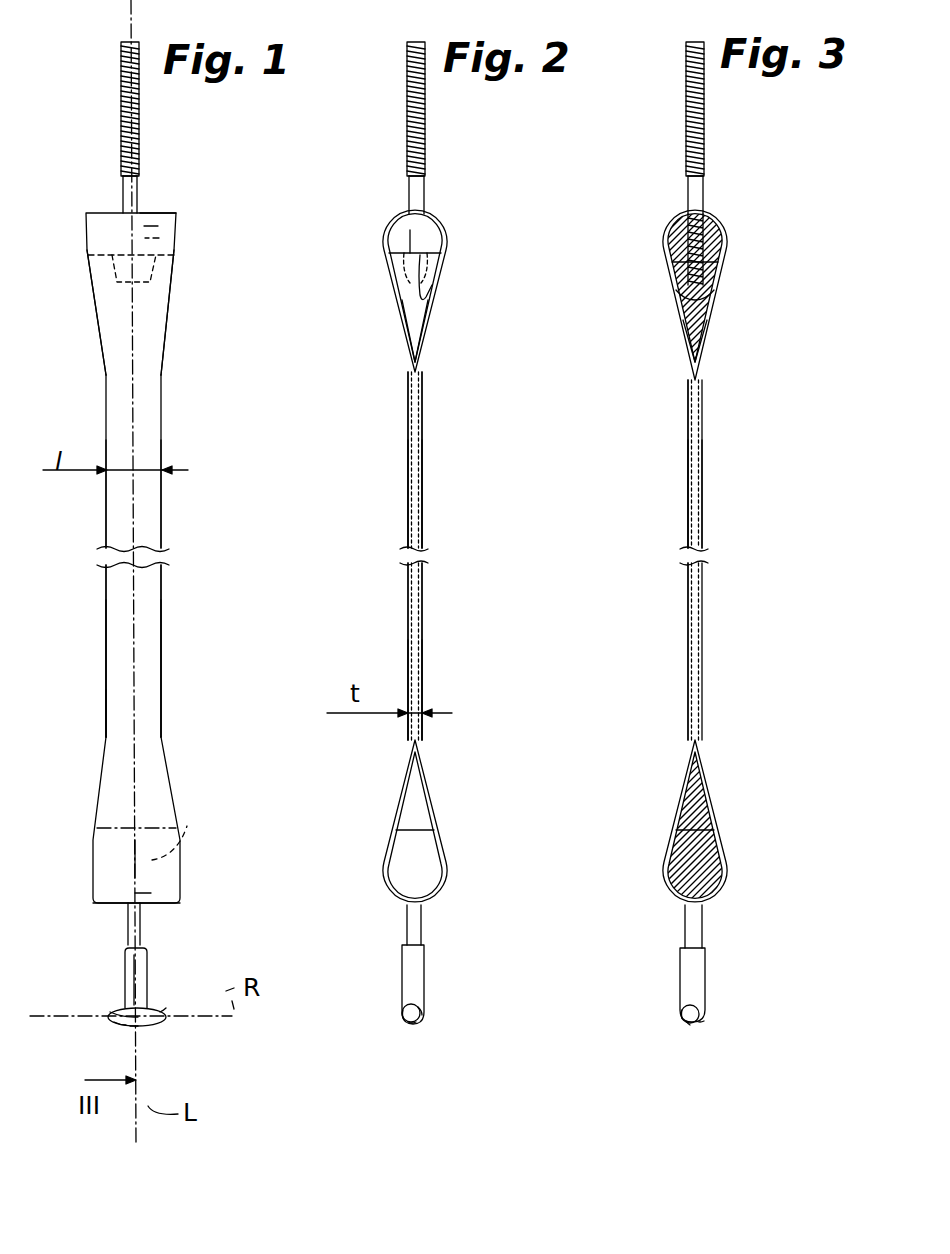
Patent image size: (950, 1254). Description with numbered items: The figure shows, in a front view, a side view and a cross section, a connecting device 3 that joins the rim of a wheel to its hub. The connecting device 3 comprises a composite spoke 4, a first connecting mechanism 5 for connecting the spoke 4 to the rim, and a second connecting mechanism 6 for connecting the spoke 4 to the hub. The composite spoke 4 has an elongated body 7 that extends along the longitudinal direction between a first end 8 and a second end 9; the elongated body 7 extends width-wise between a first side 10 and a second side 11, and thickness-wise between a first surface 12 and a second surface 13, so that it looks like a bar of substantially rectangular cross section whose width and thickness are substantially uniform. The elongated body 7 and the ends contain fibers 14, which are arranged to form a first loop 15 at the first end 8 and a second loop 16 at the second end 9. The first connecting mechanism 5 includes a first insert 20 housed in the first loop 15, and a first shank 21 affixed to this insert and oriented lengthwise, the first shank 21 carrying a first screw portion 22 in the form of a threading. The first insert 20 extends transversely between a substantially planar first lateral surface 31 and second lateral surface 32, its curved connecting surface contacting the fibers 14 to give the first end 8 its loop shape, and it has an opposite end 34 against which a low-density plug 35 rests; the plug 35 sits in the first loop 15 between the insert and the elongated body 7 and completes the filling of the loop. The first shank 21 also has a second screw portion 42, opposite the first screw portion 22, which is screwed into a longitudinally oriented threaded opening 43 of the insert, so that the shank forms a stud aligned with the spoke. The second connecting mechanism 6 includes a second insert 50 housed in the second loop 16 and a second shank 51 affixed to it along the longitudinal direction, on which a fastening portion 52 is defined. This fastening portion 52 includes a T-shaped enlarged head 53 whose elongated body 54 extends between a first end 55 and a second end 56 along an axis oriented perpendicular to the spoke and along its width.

In FIG. 1, the connecting device 3 is at (84, 430).
In FIG. 2, the connecting device 3 is at (380, 492).
In FIG. 3, the connecting device 3 is at (662, 448).
In FIG. 1, the composite spoke 4 is at (107, 520).
In FIG. 2, the composite spoke 4 is at (408, 514).
In FIG. 3, the composite spoke 4 is at (688, 510).
In FIG. 1, the first connecting mechanism 5 is at (121, 190).
In FIG. 2, the first connecting mechanism 5 is at (407, 197).
In FIG. 3, the first connecting mechanism 5 is at (686, 197).
In FIG. 1, the second connecting mechanism 6 is at (126, 962).
In FIG. 2, the second connecting mechanism 6 is at (401, 972).
In FIG. 3, the second connecting mechanism 6 is at (705, 970).
In FIG. 1, the elongated body 7 is at (162, 422).
In FIG. 2, the elongated body 7 is at (422, 506).
In FIG. 3, the elongated body 7 is at (702, 655).
In FIG. 1, the first end 8 is at (88, 258).
In FIG. 2, the first end 8 is at (448, 250).
In FIG. 3, the first end 8 is at (728, 230).
In FIG. 1, the second end 9 is at (93, 870).
In FIG. 2, the second end 9 is at (384, 874).
In FIG. 3, the second end 9 is at (727, 878).
In FIG. 1, the first side 10 is at (107, 633).
In FIG. 2, the first side 10 is at (410, 660).
In FIG. 3, the first side 10 is at (702, 386).
In FIG. 1, the second side 11 is at (162, 628).
In FIG. 1, the first surface 12 is at (123, 696).
In FIG. 2, the first surface 12 is at (422, 608).
In FIG. 3, the first surface 12 is at (702, 450).
In FIG. 1, the second surface 13 is at (123, 736).
In FIG. 2, the second surface 13 is at (408, 608).
In FIG. 3, the second surface 13 is at (688, 640).
In FIG. 1, the fibers 14 is at (110, 304).
In FIG. 2, the fibers 14 is at (408, 414).
In FIG. 1, the first loop 15 is at (176, 216).
In FIG. 2, the first loop 15 is at (440, 216).
In FIG. 3, the first loop 15 is at (730, 262).
In FIG. 1, the second loop 16 is at (180, 880).
In FIG. 2, the second loop 16 is at (448, 876).
In FIG. 3, the second loop 16 is at (708, 795).
In FIG. 1, the first insert 20 is at (182, 284).
In FIG. 2, the first insert 20 is at (400, 246).
In FIG. 1, the first shank 21 is at (139, 187).
In FIG. 2, the first shank 21 is at (425, 188).
In FIG. 3, the first shank 21 is at (703, 182).
In FIG. 1, the first screw portion 22 is at (140, 128).
In FIG. 2, the first screw portion 22 is at (427, 125).
In FIG. 3, the first screw portion 22 is at (705, 140).
In FIG. 1, the first lateral surface 31 is at (88, 229).
In FIG. 2, the first lateral surface 31 is at (400, 278).
In FIG. 1, the second lateral surface 32 is at (176, 250).
In FIG. 2, the end of the insert 34 is at (432, 306).
In FIG. 3, the end of the insert 34 is at (672, 292).
In FIG. 2, the plug 35 is at (418, 324).
In FIG. 3, the plug 35 is at (682, 334).
In FIG. 3, the second screw portion 42 is at (668, 257).
In FIG. 3, the threaded opening 43 is at (727, 306).
In FIG. 1, the second insert 50 is at (190, 835).
In FIG. 2, the second insert 50 is at (410, 844).
In FIG. 3, the second insert 50 is at (716, 835).
In FIG. 1, the second shank 51 is at (147, 955).
In FIG. 2, the second shank 51 is at (421, 934).
In FIG. 3, the second shank 51 is at (680, 960).
In FIG. 1, the fastening portion 52 is at (142, 1027).
In FIG. 2, the fastening portion 52 is at (422, 1026).
In FIG. 3, the fastening portion 52 is at (705, 1020).
In FIG. 1, the T-shaped enlarged head 53 is at (118, 1022).
In FIG. 2, the T-shaped enlarged head 53 is at (413, 1026).
In FIG. 3, the T-shaped enlarged head 53 is at (700, 1027).
In FIG. 1, the elongated body of the head 54 is at (133, 1028).
In FIG. 2, the elongated body of the head 54 is at (423, 1013).
In FIG. 3, the elongated body of the head 54 is at (683, 1013).
In FIG. 1, the first end of the head 55 is at (110, 1008).
In FIG. 2, the first end of the head 55 is at (406, 1014).
In FIG. 3, the first end of the head 55 is at (688, 1022).
In FIG. 1, the second end of the head 56 is at (167, 1010).